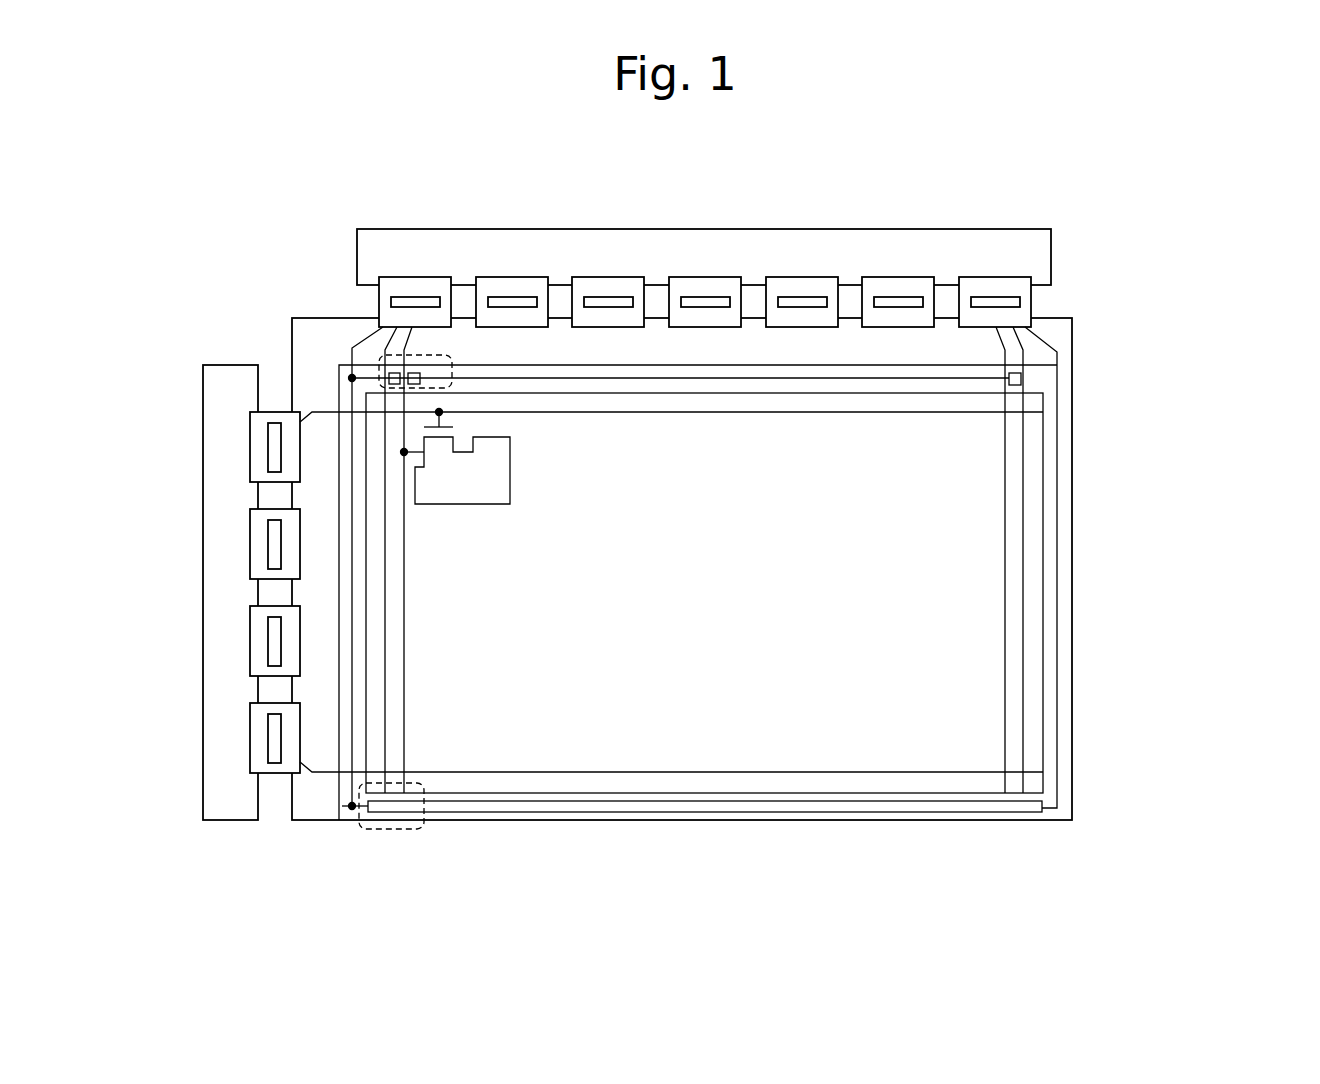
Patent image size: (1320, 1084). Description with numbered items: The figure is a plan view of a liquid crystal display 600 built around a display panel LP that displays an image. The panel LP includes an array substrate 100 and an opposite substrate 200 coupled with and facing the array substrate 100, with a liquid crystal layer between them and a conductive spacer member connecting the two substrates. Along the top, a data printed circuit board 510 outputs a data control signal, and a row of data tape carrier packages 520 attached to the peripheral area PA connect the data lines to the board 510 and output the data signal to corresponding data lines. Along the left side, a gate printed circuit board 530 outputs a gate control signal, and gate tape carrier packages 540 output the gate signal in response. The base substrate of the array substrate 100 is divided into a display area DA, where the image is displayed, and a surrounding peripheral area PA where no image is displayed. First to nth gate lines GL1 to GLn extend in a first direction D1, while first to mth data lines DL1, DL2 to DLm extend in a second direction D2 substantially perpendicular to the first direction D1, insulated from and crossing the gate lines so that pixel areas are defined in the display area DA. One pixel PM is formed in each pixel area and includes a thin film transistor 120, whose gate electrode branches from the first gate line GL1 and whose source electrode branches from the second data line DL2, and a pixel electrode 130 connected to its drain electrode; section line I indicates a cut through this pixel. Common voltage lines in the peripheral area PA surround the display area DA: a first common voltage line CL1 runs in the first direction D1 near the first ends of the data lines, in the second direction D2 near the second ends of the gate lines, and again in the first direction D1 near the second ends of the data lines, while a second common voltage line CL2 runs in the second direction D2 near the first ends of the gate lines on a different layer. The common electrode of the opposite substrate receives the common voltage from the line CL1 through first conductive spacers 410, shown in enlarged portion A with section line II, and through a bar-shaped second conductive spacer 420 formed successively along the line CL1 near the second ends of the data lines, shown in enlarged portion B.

The liquid crystal display 600 is at (1094, 167).
The array substrate 100 is at (1060, 330).
The opposite substrate 200 is at (1065, 362).
The data printed circuit board 510 is at (515, 243).
The data tape carrier package 520 is at (404, 277).
The gate printed circuit board 530 is at (227, 527).
The gate tape carrier package 540 is at (250, 447).
The first conductive spacer 410 is at (393, 372).
The second conductive spacer 420 is at (876, 812).
The thin film transistor 120 is at (438, 448).
The pixel electrode 130 is at (499, 532).
The pixel PM is at (463, 509).
The peripheral area PA is at (849, 345).
The display area DA is at (1043, 470).
The display panel LP is at (1092, 311).
The first gate line GL1 is at (788, 413).
The nth gate line GLn is at (790, 770).
The first data line DL1 is at (385, 682).
The second data line DL2 is at (404, 721).
The mth data line DLm is at (1023, 660).
The first common voltage line CL1 is at (875, 380).
The second common voltage line CL2 is at (353, 645).
The portion A is at (431, 355).
The portion B is at (398, 832).
The section line I-I' I is at (543, 486).
The section line II-II' II is at (463, 378).
The first direction D1 is at (1198, 775).
The second direction D2 is at (1254, 830).